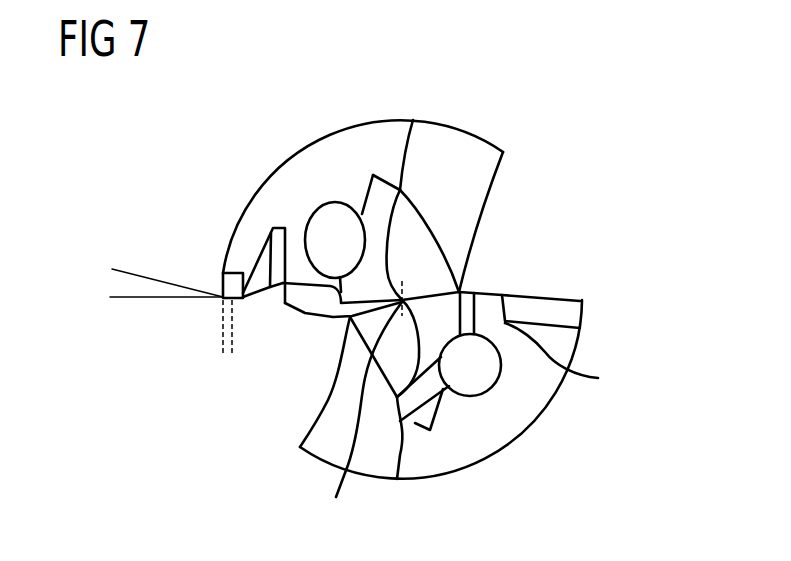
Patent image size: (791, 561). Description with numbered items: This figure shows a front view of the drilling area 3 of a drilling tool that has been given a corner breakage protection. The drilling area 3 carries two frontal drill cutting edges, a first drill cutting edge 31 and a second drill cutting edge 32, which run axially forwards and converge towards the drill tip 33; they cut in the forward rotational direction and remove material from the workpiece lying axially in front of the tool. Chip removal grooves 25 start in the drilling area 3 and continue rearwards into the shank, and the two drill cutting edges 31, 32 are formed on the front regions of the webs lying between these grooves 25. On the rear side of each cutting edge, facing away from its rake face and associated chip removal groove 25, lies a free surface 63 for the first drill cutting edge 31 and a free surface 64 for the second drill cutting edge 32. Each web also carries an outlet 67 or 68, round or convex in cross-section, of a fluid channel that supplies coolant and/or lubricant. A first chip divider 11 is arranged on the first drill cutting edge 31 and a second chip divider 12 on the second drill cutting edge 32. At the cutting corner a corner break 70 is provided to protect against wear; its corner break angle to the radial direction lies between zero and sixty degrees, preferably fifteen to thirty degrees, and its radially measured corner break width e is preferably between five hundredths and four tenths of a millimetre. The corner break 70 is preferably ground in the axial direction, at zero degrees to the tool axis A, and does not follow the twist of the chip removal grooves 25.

The drilling area 3 is at (531, 75).
The first chip divider 11 is at (256, 277).
The second chip divider 12 is at (490, 312).
The chip removal grooves 25 is at (529, 198).
The first drill cutting edge 31 is at (298, 380).
The second drill cutting edge 32 is at (530, 307).
The drill tip 33 is at (463, 416).
The free surface 63 is at (230, 283).
The free surface 64 is at (530, 296).
The outlet 67 is at (330, 234).
The outlet 68 is at (470, 367).
The corner break 70 is at (213, 308).
The tool axis A is at (402, 299).
The corner break width e is at (265, 348).